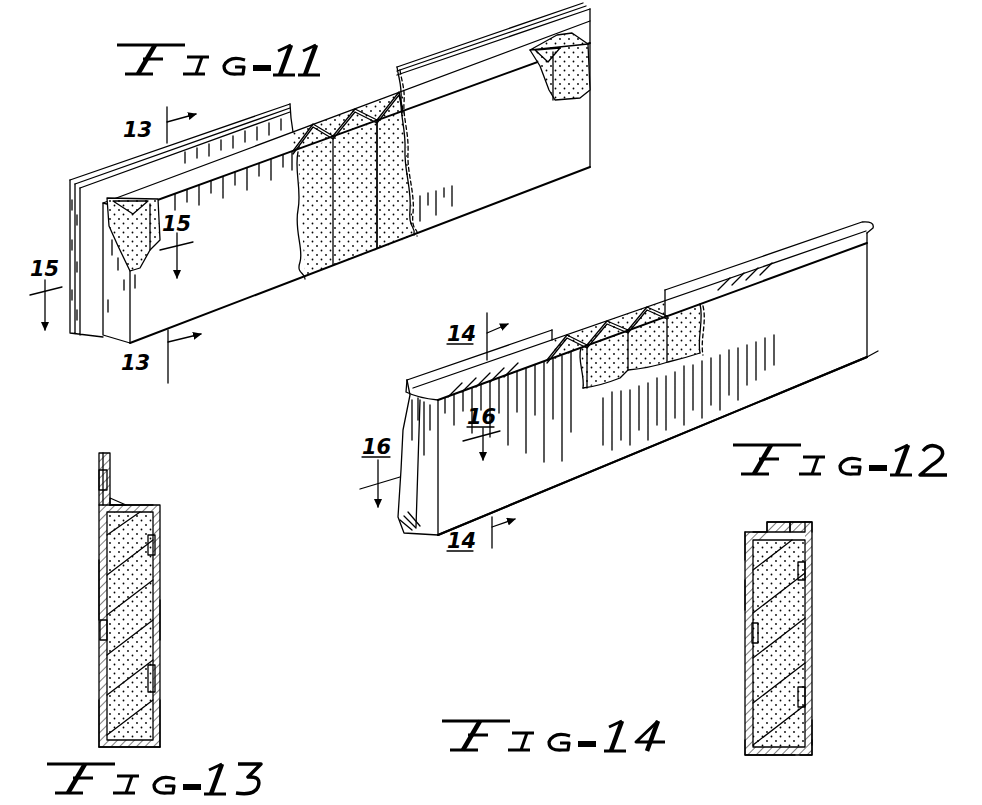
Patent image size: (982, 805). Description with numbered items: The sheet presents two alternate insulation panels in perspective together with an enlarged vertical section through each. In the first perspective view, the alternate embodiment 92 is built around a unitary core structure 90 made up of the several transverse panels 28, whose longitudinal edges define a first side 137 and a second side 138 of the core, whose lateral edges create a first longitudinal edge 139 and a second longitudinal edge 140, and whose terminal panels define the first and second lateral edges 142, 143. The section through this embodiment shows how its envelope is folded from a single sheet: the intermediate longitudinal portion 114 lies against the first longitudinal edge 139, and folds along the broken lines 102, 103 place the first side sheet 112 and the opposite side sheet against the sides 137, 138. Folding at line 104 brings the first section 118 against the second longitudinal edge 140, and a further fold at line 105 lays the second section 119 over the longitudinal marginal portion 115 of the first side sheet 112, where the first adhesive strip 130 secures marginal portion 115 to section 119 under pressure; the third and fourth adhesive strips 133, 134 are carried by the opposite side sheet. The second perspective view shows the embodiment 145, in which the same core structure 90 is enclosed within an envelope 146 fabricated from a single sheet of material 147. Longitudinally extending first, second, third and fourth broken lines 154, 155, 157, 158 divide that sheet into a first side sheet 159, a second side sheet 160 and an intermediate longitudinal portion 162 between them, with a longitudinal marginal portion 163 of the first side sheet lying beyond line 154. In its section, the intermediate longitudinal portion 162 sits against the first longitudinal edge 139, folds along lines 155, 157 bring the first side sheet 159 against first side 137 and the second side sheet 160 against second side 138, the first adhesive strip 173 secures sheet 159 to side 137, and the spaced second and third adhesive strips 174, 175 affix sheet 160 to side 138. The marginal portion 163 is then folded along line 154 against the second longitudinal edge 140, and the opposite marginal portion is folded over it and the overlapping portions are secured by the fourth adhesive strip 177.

In FIG. 11, the panel 28 is at (333, 128).
In FIG. 11, the unitary core structure 90 is at (340, 233).
In FIG. 12, the unitary core structure 90 is at (634, 294).
In FIG. 13, the unitary core structure 90 is at (150, 637).
In FIG. 14, the unitary core structure 90 is at (762, 690).
In FIG. 11, the alternate embodiment 92 is at (598, 118).
In FIG. 13, the alternate embodiment 92 is at (163, 617).
In FIG. 13, the broken line 102 is at (97, 740).
In FIG. 13, the broken line 103 is at (150, 748).
In FIG. 13, the broken line 104 is at (158, 506).
In FIG. 13, the broken line 105 is at (113, 503).
In FIG. 13, the first side sheet 112 is at (103, 587).
In FIG. 13, the intermediate longitudinal portion 114 is at (153, 752).
In FIG. 13, the longitudinal marginal portion 115 is at (99, 462).
In FIG. 13, the first section 118 is at (127, 503).
In FIG. 13, the second section 119 is at (107, 460).
In FIG. 13, the first adhesive strip 130 is at (100, 480).
In FIG. 13, the third adhesive strip 133 is at (155, 545).
In FIG. 13, the fourth adhesive strip 134 is at (155, 677).
In FIG. 11, the first side 137 is at (384, 94).
In FIG. 13, the first side 137 is at (103, 553).
In FIG. 14, the first side 137 is at (752, 680).
In FIG. 11, the second side 138 is at (390, 232).
In FIG. 13, the second side 138 is at (157, 592).
In FIG. 14, the second side 138 is at (812, 651).
In FIG. 11, the first longitudinal edge 139 is at (312, 276).
In FIG. 13, the first longitudinal edge 139 is at (105, 750).
In FIG. 14, the first longitudinal edge 139 is at (760, 756).
In FIG. 13, the second longitudinal edge 140 is at (117, 503).
In FIG. 14, the second longitudinal edge 140 is at (787, 522).
In FIG. 11, the first lateral edge 142 is at (589, 54).
In FIG. 11, the second lateral edge 143 is at (120, 203).
In FIG. 12, the embodiment 145 is at (879, 296).
In FIG. 12, the envelope 146 is at (797, 386).
In FIG. 14, the sheet of material 147 is at (808, 735).
In FIG. 14, the first broken line 154 is at (745, 530).
In FIG. 14, the second broken line 155 is at (755, 754).
In FIG. 14, the third broken line 157 is at (812, 751).
In FIG. 14, the fourth broken line 158 is at (812, 523).
In FIG. 14, the first side sheet 159 is at (750, 595).
In FIG. 14, the second side sheet 160 is at (812, 625).
In FIG. 14, the intermediate longitudinal portion 162 is at (776, 757).
In FIG. 14, the longitudinal marginal portion 163 is at (762, 530).
In FIG. 14, the first adhesive strip 173 is at (752, 640).
In FIG. 14, the second adhesive strip 174 is at (806, 700).
In FIG. 14, the third adhesive strip 175 is at (806, 570).
In FIG. 14, the fourth adhesive strip 177 is at (780, 522).